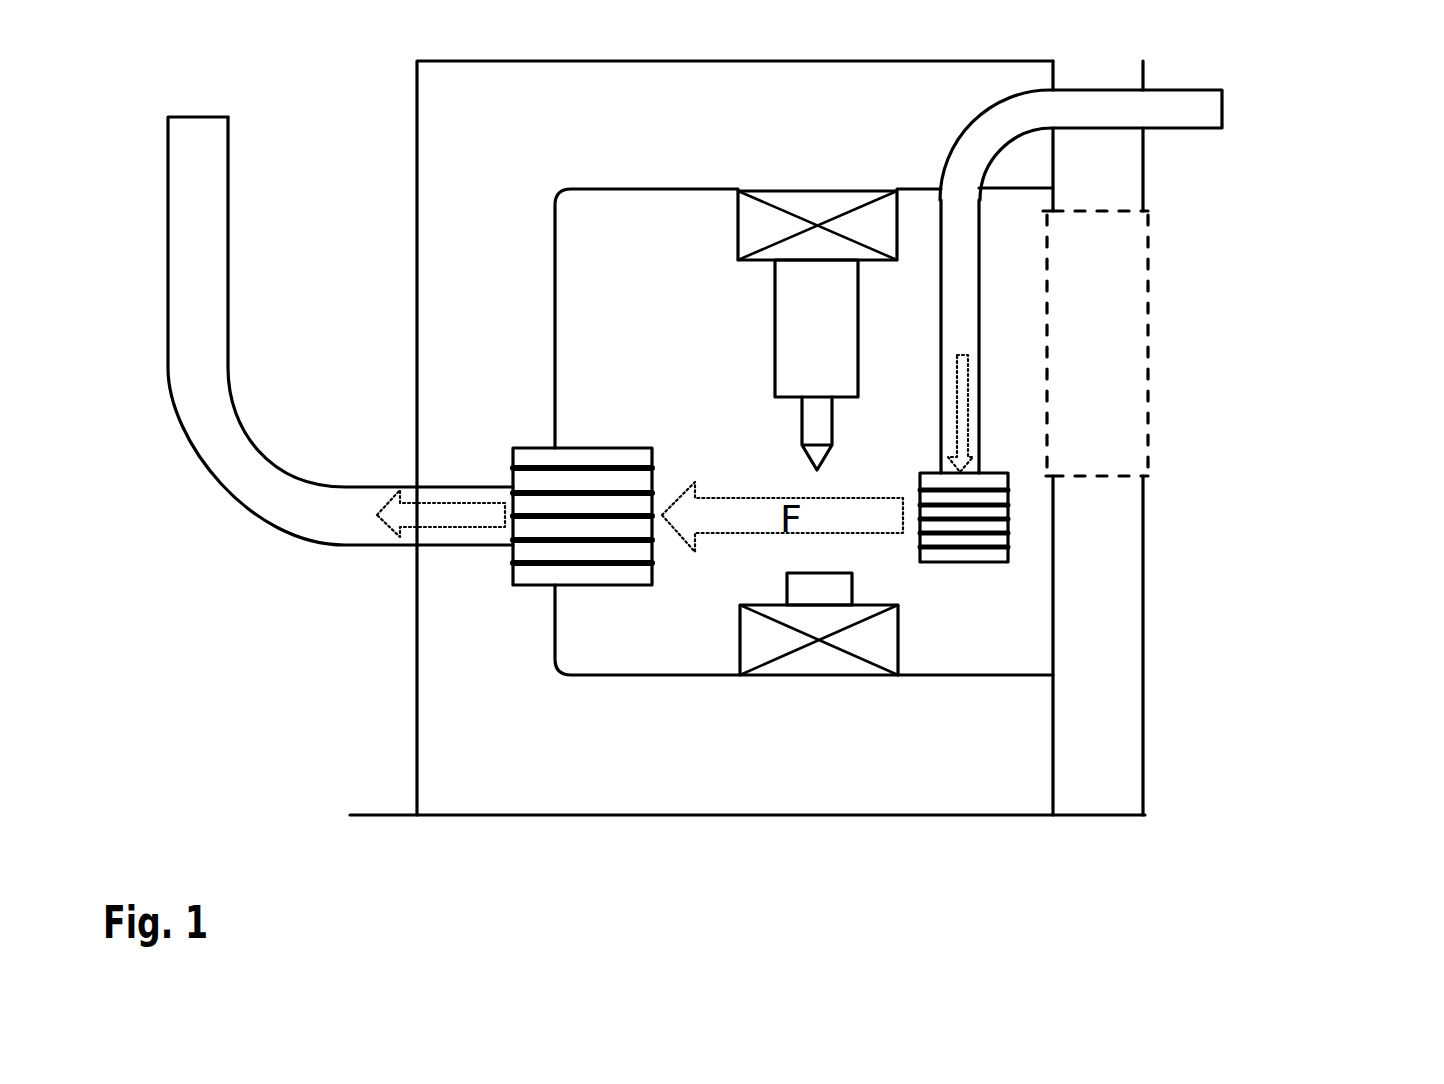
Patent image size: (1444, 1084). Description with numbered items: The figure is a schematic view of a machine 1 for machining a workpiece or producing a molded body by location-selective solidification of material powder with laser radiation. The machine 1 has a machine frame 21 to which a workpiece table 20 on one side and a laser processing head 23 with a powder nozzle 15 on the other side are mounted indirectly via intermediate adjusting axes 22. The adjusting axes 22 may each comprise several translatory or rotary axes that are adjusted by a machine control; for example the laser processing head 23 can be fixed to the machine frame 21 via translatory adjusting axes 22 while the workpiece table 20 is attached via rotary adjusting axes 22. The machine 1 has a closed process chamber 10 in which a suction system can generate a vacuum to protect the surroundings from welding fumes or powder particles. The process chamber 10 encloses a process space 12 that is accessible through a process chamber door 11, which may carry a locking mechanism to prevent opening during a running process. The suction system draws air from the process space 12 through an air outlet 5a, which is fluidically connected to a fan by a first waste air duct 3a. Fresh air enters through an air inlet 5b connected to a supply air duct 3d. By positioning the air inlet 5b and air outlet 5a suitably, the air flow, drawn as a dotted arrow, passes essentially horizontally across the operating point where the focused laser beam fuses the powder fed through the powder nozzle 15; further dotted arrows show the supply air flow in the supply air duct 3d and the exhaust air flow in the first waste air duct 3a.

The machine 1 is at (508, 157).
The first waste air duct 3a is at (295, 487).
The supply air duct 3d is at (973, 237).
The air outlet 5a is at (560, 512).
The air inlet 5b is at (1008, 533).
The process chamber 10 is at (1100, 142).
The process chamber door 11 is at (1130, 362).
The process space 12 is at (577, 643).
The powder nozzle 15 is at (807, 457).
The workpiece table 20 is at (833, 592).
The machine frame 21 is at (480, 755).
The adjusting axes 22 is at (740, 222).
The laser processing head 23 is at (775, 330).